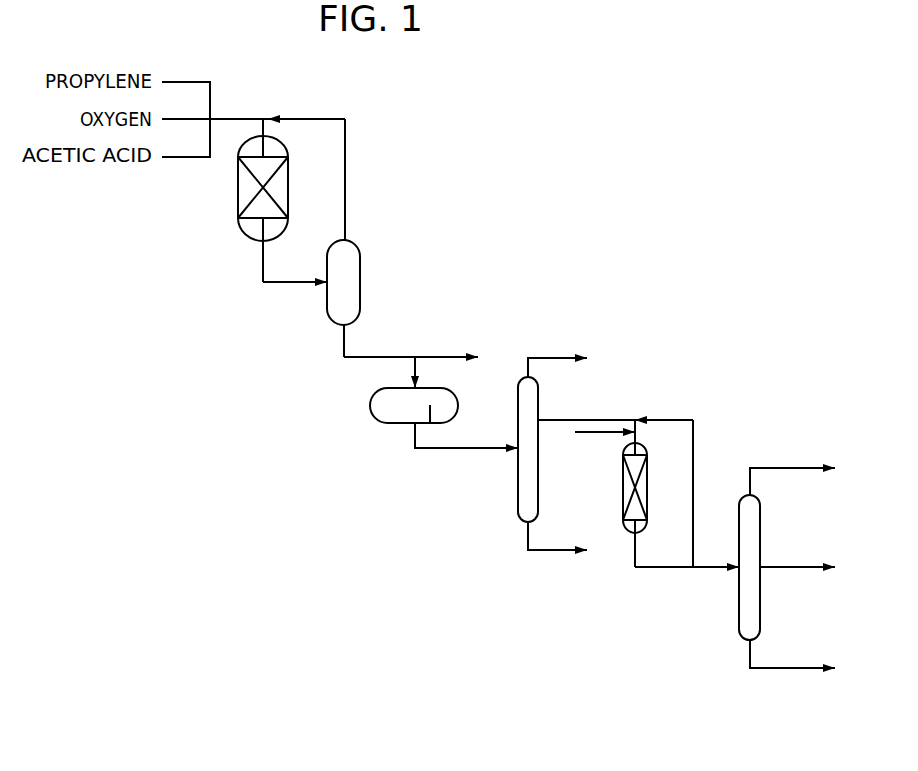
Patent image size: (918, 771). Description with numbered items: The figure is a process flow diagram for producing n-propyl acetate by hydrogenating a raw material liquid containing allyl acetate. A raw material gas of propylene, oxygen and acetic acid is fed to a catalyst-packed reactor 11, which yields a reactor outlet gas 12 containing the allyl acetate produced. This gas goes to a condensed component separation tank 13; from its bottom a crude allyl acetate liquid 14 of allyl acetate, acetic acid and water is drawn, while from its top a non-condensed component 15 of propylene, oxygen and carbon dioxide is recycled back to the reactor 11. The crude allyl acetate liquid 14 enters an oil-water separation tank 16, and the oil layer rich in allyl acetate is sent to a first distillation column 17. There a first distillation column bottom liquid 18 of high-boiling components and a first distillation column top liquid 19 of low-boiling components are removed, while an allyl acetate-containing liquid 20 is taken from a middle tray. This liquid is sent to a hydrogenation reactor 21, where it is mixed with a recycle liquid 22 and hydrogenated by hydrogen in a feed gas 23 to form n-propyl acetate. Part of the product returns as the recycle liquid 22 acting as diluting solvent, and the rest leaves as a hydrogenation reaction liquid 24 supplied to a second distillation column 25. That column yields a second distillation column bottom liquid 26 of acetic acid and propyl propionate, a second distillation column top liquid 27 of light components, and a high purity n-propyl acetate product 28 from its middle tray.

The reactor 11 is at (238, 185).
The reactor outlet gas 12 is at (264, 286).
The condensed component separation tank 13 is at (360, 283).
The crude allyl acetate liquid 14 is at (357, 358).
The non-condensed component 15 is at (345, 160).
The oil-water separation tank 16 is at (370, 405).
The first distillation column 17 is at (518, 490).
The first distillation column bottom liquid 18 is at (548, 553).
The first distillation column top liquid 19 is at (548, 355).
The allyl acetate-containing liquid 20 is at (613, 417).
The hydrogenation reactor 21 is at (623, 507).
The recycle liquid 22 is at (683, 417).
The feed gas 23 is at (598, 435).
The hydrogenation reaction liquid 24 is at (645, 570).
The second distillation column 25 is at (760, 530).
The second distillation column bottom liquid 26 is at (773, 672).
The second distillation column top liquid 27 is at (775, 466).
The n-propyl acetate product 28 is at (792, 570).